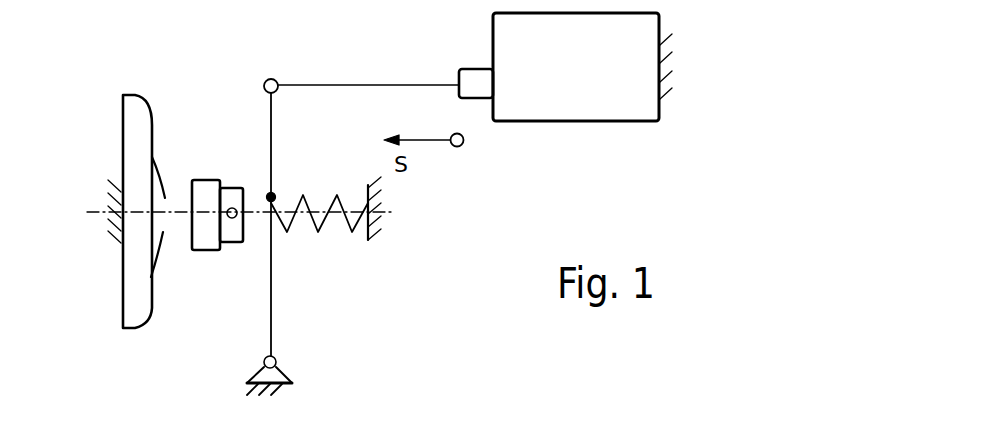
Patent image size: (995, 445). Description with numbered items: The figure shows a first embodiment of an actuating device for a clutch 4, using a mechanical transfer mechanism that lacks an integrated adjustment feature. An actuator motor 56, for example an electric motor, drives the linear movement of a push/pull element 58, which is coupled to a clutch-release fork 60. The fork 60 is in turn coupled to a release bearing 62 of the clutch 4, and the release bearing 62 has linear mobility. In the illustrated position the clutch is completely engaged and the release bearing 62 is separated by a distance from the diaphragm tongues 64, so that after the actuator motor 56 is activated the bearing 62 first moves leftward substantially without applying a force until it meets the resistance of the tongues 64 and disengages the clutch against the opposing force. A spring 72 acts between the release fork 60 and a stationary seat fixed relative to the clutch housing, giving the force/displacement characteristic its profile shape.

The clutch 4 is at (128, 290).
The diaphragm tongues 64 is at (160, 175).
The release bearing 62 is at (202, 235).
The clutch-release fork 60 is at (272, 285).
The spring 72 is at (313, 198).
The push/pull element 58 is at (475, 89).
The actuator motor 56 is at (555, 108).